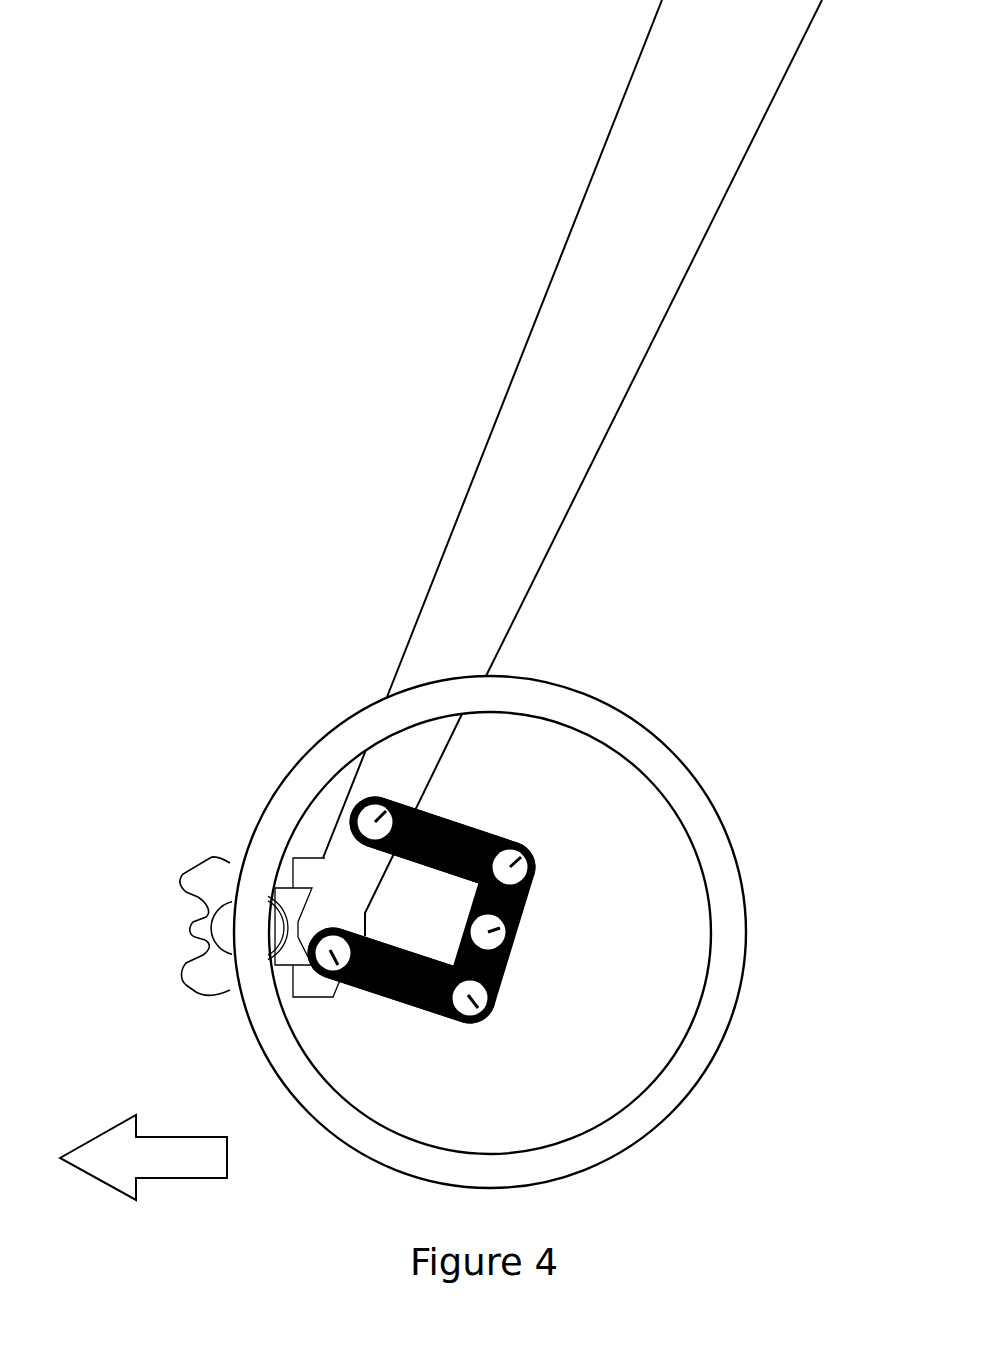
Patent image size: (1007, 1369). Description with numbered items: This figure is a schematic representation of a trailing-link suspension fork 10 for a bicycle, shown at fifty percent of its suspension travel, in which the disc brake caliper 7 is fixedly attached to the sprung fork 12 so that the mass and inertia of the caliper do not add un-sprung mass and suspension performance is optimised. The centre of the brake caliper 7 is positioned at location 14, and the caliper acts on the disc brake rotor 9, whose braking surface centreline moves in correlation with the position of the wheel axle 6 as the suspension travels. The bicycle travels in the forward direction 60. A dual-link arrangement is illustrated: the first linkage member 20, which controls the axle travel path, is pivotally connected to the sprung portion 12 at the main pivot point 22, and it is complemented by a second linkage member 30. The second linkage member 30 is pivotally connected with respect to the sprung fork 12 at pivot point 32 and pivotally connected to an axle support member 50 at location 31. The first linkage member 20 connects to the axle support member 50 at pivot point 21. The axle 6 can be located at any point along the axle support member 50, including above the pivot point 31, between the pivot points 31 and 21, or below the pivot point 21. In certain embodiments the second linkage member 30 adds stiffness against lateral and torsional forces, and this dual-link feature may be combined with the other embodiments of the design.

The trailing-link suspension fork 10 is at (640, 244).
The sprung fork 12 is at (459, 621).
The disc brake rotor 9 is at (711, 803).
The disc brake caliper 7 is at (192, 975).
The location of the centre of the brake caliper 14 is at (230, 928).
The axle 6 is at (464, 915).
The second linkage member 30 is at (463, 822).
The pivot point 31 is at (528, 848).
The pivot point 32 is at (398, 798).
The axle support member 50 is at (508, 973).
The first linkage member 20 is at (408, 1008).
The pivot point 21 is at (483, 1020).
The main pivot point 22 is at (335, 988).
The forward direction 60 is at (143, 1155).